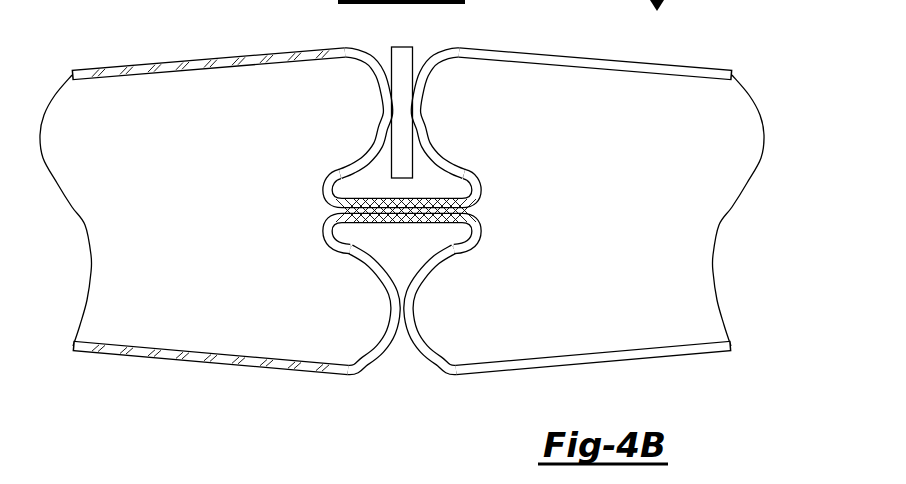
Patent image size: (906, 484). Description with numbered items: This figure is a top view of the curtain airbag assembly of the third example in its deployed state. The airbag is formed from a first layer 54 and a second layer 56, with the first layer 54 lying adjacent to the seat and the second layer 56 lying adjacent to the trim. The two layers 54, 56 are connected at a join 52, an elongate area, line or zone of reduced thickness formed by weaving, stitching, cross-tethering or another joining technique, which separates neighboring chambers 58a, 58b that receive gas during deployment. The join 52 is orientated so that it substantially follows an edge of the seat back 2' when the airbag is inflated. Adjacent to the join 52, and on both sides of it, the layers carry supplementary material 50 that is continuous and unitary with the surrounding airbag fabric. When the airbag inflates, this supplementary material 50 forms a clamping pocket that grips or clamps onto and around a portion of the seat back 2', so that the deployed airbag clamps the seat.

The seat back 2' is at (428, 97).
The supplementary material 50 is at (362, 68).
The join 52 is at (425, 206).
The first layer 54 is at (674, 66).
The second layer 56 is at (686, 353).
The first chamber 58a is at (203, 216).
The second chamber 58b is at (610, 212).